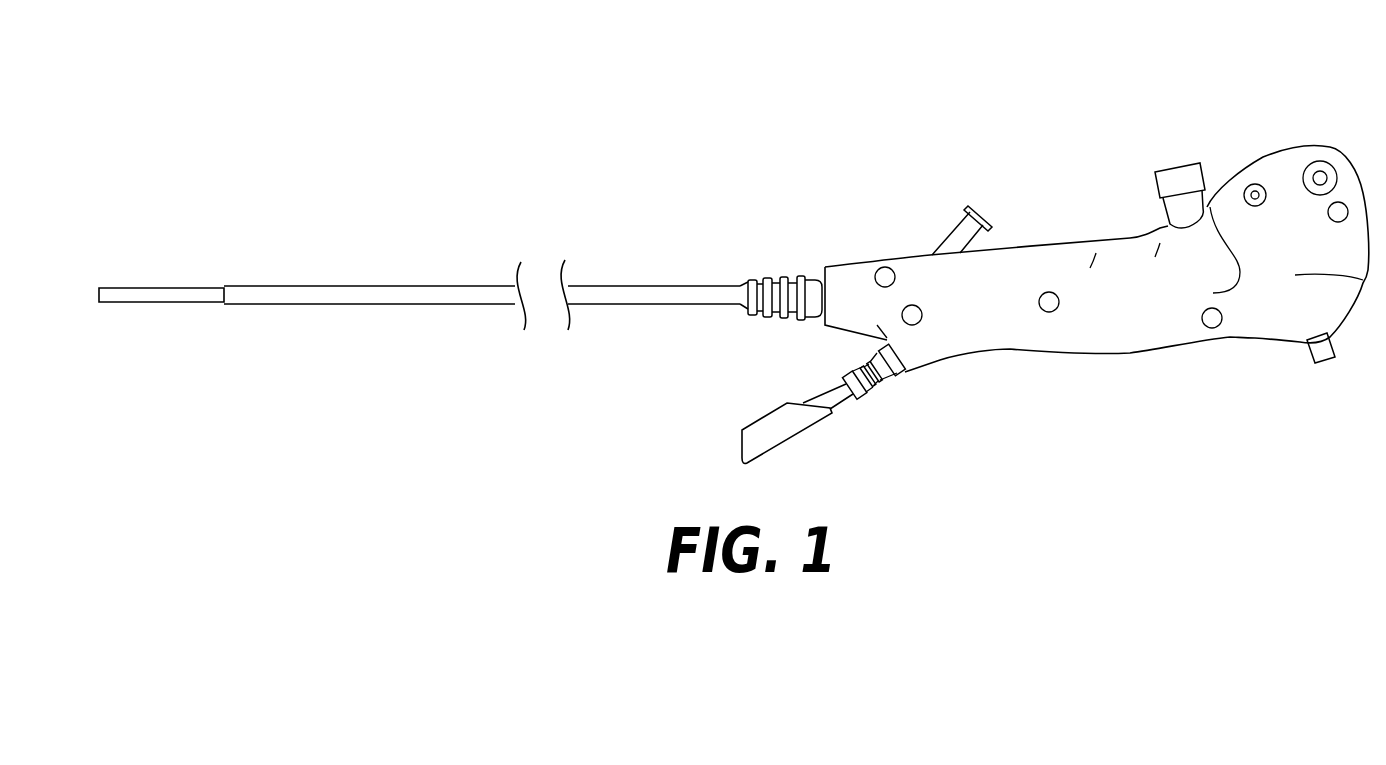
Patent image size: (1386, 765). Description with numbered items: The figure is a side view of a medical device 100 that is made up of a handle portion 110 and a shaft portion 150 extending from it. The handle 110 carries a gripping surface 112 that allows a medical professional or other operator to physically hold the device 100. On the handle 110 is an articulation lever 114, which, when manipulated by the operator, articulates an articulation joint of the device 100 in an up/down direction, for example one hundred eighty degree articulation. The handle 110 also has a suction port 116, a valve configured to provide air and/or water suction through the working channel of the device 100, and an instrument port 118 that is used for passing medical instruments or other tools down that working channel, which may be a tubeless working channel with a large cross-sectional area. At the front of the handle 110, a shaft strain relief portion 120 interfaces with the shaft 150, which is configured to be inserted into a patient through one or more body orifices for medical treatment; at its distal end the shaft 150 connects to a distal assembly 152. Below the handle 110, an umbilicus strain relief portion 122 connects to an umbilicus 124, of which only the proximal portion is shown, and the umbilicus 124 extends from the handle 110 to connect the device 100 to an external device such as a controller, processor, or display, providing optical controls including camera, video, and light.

The medical device 100 is at (438, 68).
The handle portion 110 is at (1190, 389).
The gripping surface 112 is at (1247, 280).
The articulation lever 114 is at (1327, 364).
The suction port 116 is at (1187, 162).
The instrument port 118 is at (987, 218).
The shaft strain relief portion 120 is at (765, 280).
The umbilicus strain relief portion 122 is at (860, 395).
The umbilicus 124 is at (767, 452).
The shaft portion 150 is at (593, 286).
The distal assembly 152 is at (152, 287).